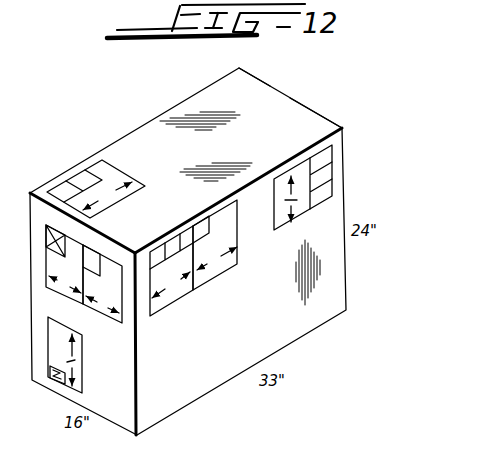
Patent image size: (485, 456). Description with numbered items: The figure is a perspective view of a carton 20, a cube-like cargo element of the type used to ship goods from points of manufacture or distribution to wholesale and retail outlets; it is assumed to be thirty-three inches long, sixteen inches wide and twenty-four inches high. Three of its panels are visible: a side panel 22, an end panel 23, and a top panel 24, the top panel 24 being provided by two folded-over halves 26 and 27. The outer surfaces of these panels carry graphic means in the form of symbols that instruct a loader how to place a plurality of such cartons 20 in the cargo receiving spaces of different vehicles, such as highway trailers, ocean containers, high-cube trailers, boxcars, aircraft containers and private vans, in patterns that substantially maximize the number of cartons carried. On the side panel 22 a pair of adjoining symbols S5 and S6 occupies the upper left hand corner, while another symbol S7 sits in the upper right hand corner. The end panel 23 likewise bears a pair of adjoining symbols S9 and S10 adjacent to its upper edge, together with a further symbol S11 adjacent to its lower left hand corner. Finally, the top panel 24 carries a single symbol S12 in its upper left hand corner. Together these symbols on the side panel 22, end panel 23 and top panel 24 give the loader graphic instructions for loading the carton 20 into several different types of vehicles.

The carton 20 is at (372, 163).
The side panel 22 is at (266, 348).
The end panel 23 is at (129, 417).
The top panel 24 is at (283, 150).
The folded-over half 26 is at (302, 116).
The folded-over half 27 is at (257, 80).
The symbol S5 is at (176, 306).
The symbol S6 is at (216, 284).
The symbol S7 is at (272, 201).
The symbol S9 is at (54, 293).
The symbol S10 is at (98, 320).
The symbol S11 is at (84, 371).
The symbol S12 is at (124, 207).